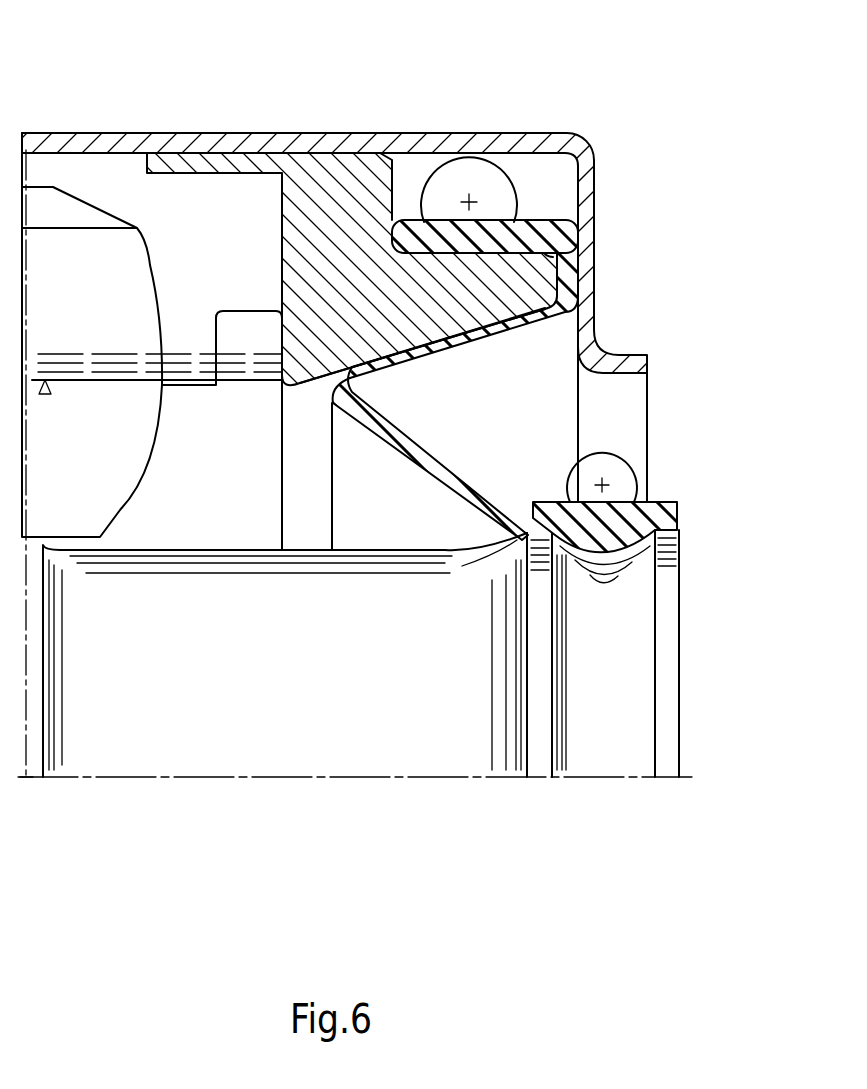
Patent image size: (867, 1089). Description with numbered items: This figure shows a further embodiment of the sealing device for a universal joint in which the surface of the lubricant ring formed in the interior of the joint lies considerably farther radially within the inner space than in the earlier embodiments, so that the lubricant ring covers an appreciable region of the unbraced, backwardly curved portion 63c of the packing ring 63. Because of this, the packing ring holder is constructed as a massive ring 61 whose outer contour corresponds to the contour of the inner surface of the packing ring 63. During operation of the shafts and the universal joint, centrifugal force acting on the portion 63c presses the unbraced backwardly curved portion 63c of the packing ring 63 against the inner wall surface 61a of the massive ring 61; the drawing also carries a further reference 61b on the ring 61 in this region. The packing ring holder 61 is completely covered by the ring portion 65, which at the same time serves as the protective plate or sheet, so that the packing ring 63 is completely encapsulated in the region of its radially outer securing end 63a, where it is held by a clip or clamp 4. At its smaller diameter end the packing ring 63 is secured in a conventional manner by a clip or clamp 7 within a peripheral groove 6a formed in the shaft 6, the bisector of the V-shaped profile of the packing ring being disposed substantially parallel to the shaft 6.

The clip or clamp 4 is at (452, 188).
The shaft 6 is at (535, 500).
The peripheral groove 6a is at (615, 572).
The clip or clamp 7 is at (628, 498).
The massive ring 61 is at (327, 167).
The inner wall surface 61a is at (353, 303).
The seal body bead 61b is at (538, 272).
The packing ring 63 is at (567, 255).
The radially outer securing end 63a is at (513, 235).
The unbraced backwardly curved portion 63c is at (432, 358).
The ring portion 65 is at (582, 257).